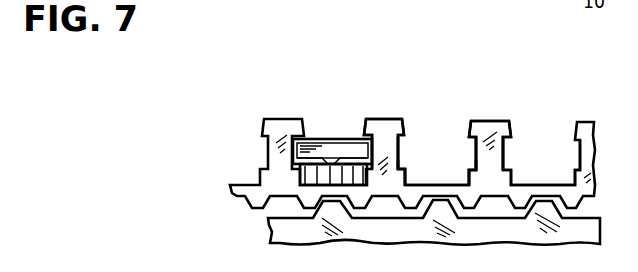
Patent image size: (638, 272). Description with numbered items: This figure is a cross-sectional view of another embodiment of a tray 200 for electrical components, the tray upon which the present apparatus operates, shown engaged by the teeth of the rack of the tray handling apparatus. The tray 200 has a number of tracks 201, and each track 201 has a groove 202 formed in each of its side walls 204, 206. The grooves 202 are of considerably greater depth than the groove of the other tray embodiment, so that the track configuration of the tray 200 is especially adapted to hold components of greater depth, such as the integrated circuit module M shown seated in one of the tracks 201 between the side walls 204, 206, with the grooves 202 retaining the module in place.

The tray 200 is at (261, 106).
The track 201 is at (436, 116).
The groove 202 is at (400, 142).
The side wall 204 is at (406, 171).
The side wall 206 is at (470, 171).
The integrated circuit module M is at (336, 139).